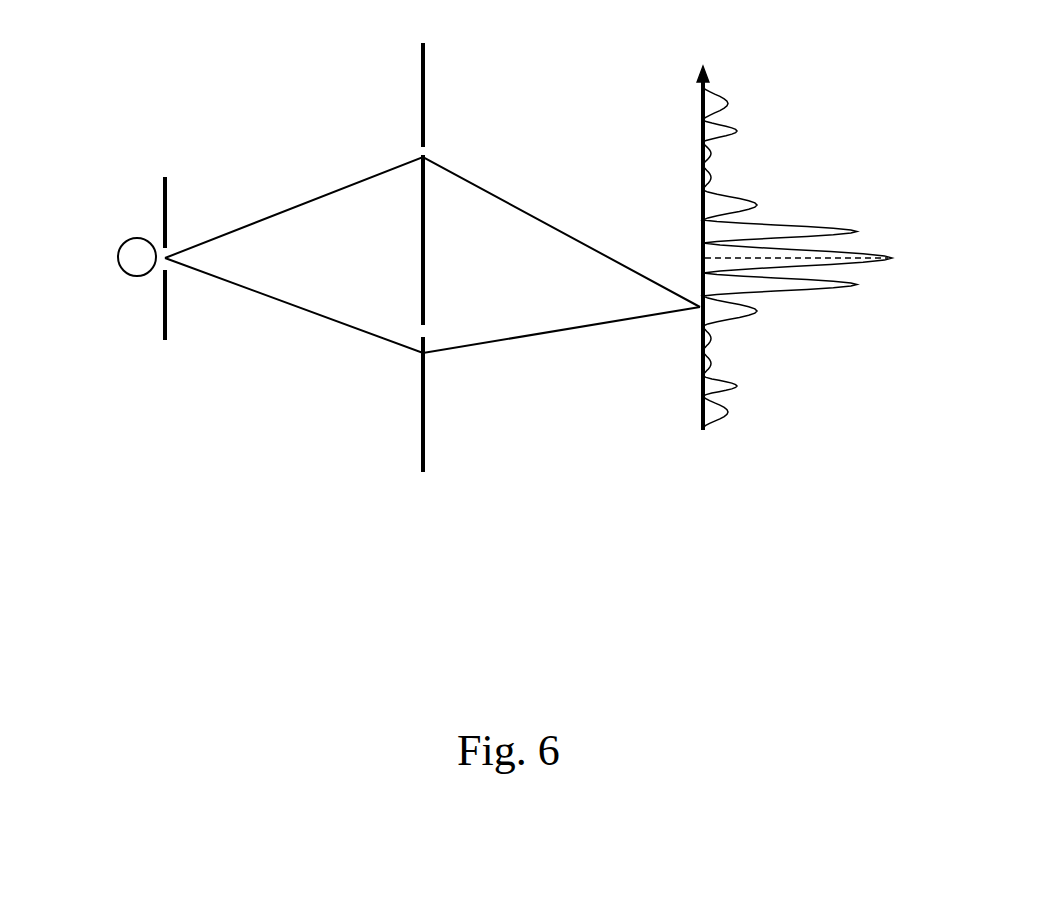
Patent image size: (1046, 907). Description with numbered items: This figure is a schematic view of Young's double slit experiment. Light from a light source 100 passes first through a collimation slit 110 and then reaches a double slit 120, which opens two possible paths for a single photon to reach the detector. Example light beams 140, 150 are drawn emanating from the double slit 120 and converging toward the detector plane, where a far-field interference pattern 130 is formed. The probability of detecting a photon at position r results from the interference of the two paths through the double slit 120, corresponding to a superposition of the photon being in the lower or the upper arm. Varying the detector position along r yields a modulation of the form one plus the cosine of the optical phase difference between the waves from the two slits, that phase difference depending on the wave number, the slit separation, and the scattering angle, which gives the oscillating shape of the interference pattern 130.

The light source 100 is at (126, 272).
The collimation slit 110 is at (160, 330).
The double slit 120 is at (424, 455).
The far-field interference pattern 130 is at (832, 287).
The light beam 140 is at (578, 330).
The light beam 150 is at (470, 183).